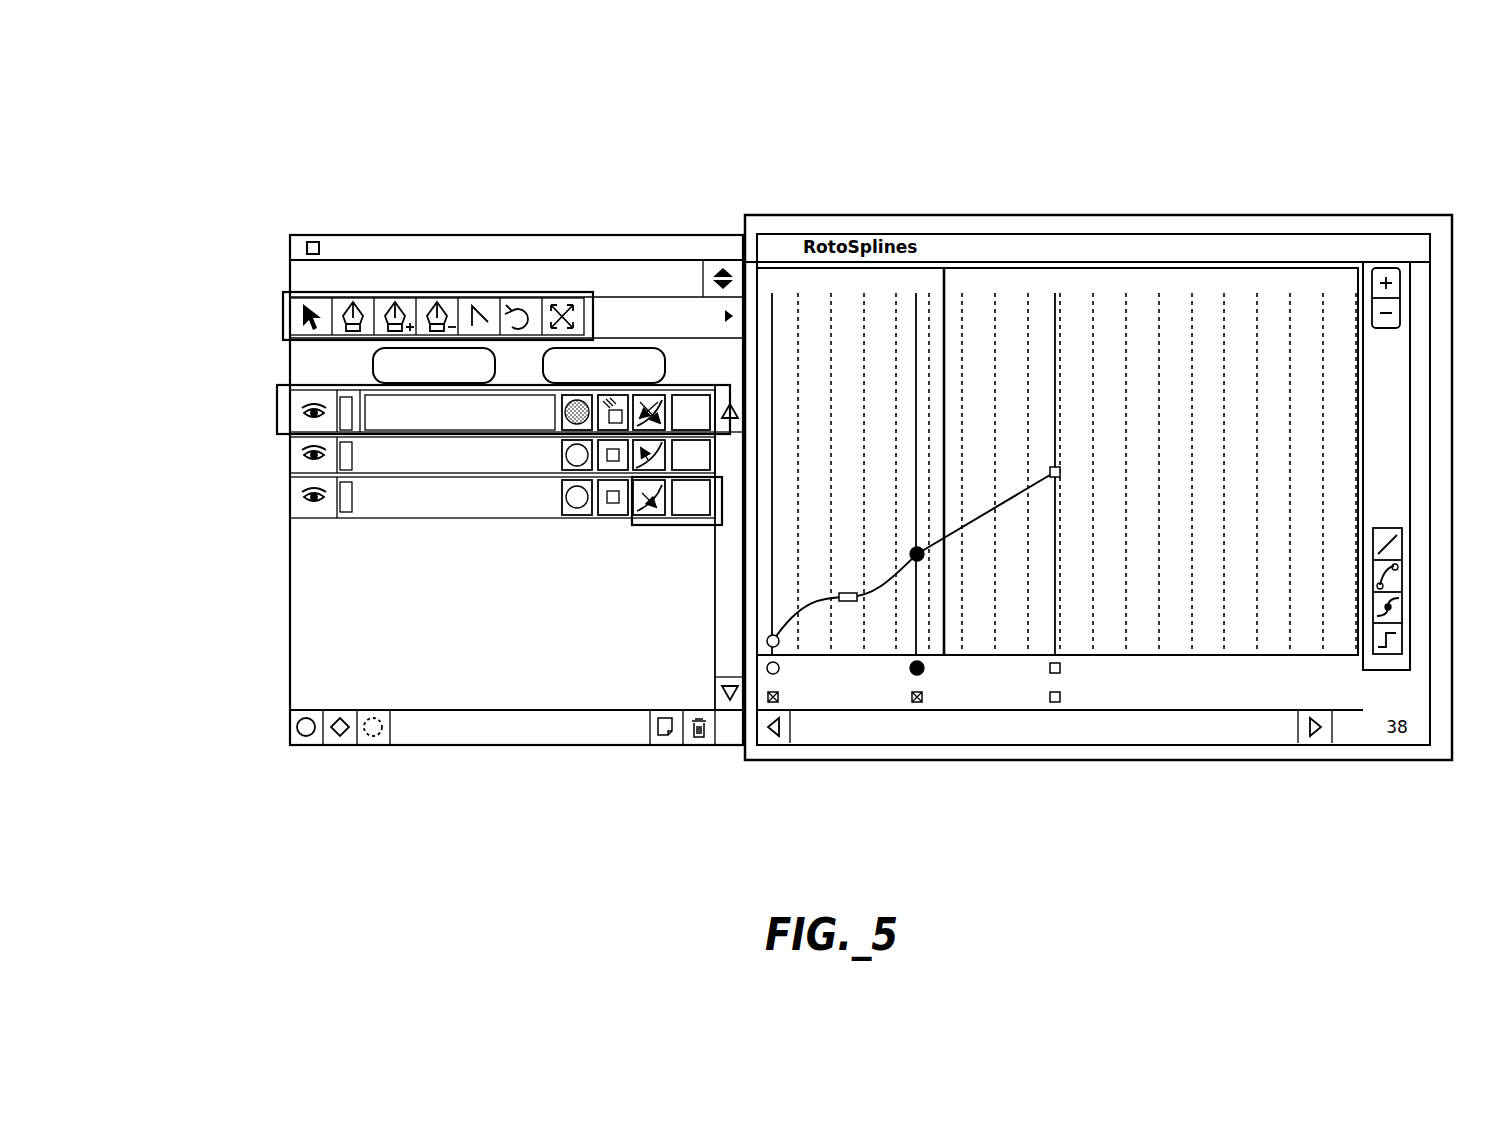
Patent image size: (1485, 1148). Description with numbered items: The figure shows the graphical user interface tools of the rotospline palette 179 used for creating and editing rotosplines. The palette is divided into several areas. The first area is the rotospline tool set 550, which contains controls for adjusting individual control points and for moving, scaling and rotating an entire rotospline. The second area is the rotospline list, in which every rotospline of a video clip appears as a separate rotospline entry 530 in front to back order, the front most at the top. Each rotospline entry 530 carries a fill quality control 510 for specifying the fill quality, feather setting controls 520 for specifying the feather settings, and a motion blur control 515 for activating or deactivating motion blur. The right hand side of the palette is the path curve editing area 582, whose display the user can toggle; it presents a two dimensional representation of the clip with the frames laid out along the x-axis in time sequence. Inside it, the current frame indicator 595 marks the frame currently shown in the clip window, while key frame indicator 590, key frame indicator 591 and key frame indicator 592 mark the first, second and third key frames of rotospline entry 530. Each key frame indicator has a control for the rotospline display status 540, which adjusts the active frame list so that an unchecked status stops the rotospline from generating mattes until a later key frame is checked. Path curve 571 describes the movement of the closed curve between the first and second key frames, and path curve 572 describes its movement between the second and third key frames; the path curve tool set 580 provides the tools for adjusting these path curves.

The rotospline palette 179 is at (454, 488).
The rotospline tool set 550 is at (280, 285).
The rotospline entry 530 is at (276, 418).
The fill quality control 510 is at (573, 523).
The motion blur control 515 is at (610, 523).
The feather setting controls 520 is at (683, 530).
The key frame indicator 590 is at (782, 290).
The key frame indicator 591 is at (927, 290).
The current frame indicator 595 is at (948, 312).
The key frame indicator 592 is at (1062, 309).
The path curve 571 is at (850, 608).
The path curve 572 is at (974, 529).
The rotospline display status 540 is at (916, 714).
The path curve editing area 582 is at (1096, 498).
The path curve tool set 580 is at (1387, 668).